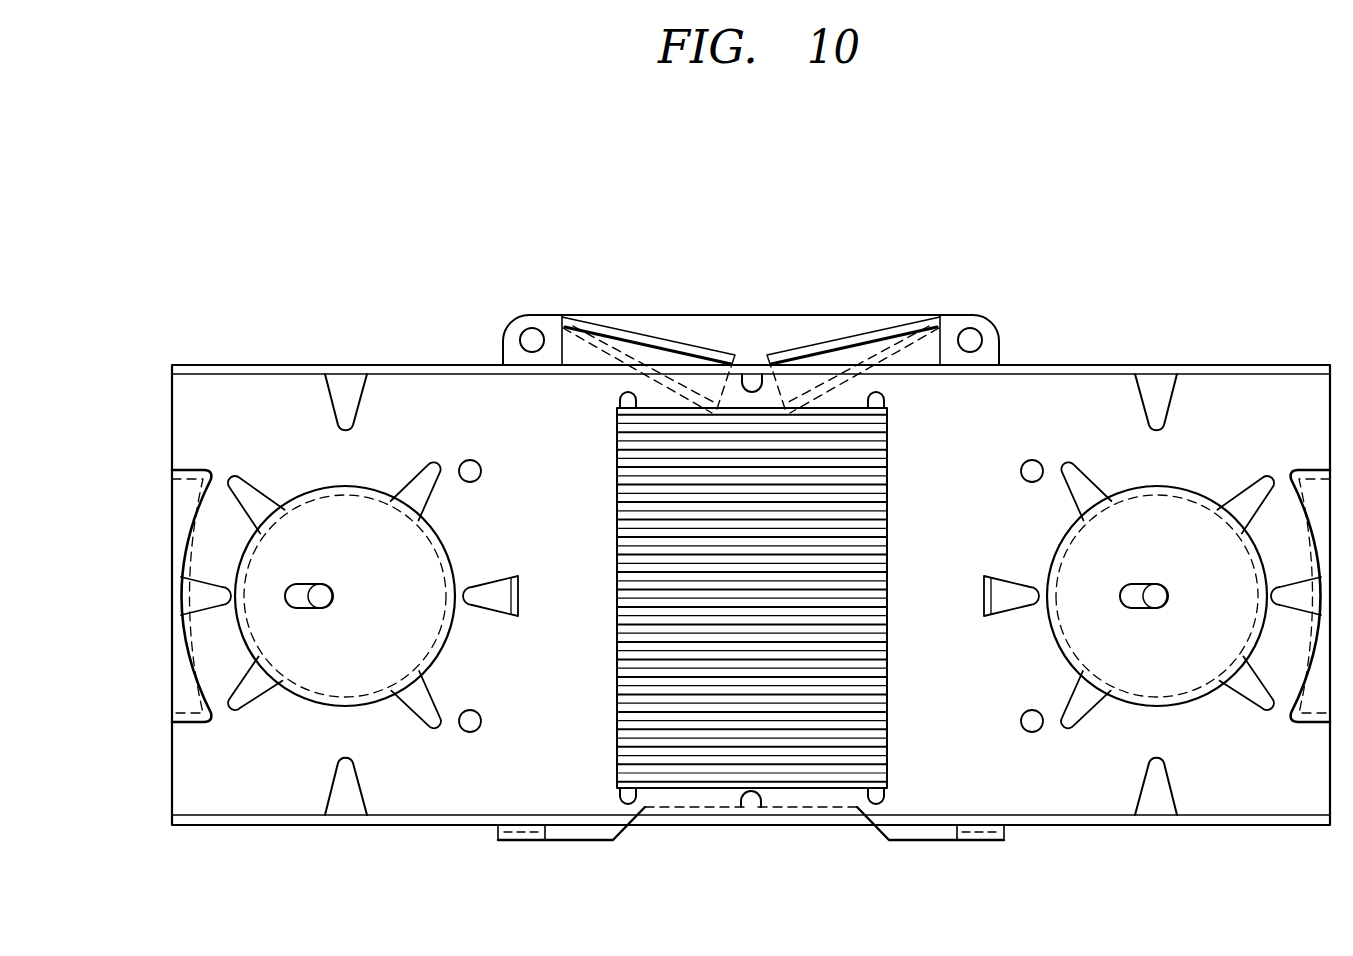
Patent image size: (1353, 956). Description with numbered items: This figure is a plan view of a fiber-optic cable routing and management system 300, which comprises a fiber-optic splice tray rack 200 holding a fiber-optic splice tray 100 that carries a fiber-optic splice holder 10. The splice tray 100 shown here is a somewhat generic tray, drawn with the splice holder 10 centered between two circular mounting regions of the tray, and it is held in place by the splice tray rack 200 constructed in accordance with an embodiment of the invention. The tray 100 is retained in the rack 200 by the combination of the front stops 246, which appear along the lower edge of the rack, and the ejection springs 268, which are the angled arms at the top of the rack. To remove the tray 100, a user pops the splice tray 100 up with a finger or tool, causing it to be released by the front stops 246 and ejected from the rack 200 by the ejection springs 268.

The fiber-optic splice holder 10 is at (896, 477).
The fiber-optic splice tray 100 is at (1234, 364).
The fiber-optic splice tray rack 200 is at (751, 288).
The ejection springs 268 is at (612, 330).
The front stops 246 is at (522, 838).
The fiber-optic cable routing and management system 300 is at (705, 535).